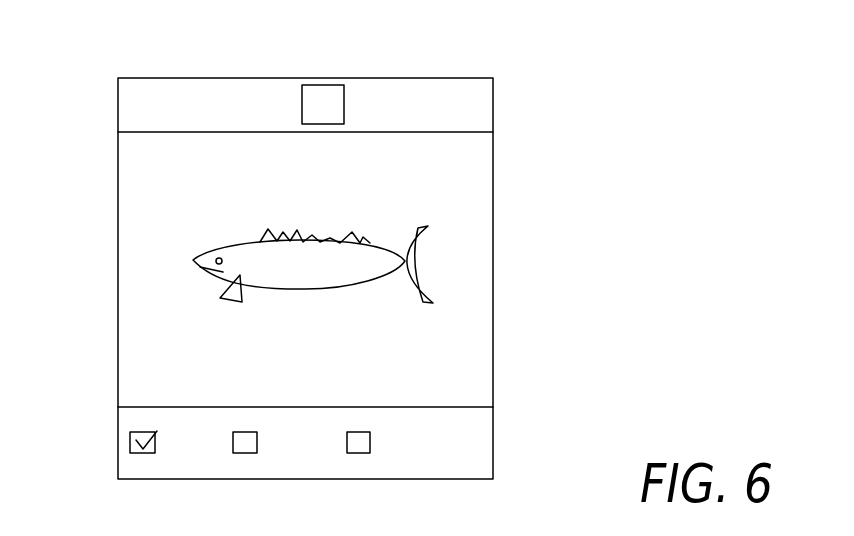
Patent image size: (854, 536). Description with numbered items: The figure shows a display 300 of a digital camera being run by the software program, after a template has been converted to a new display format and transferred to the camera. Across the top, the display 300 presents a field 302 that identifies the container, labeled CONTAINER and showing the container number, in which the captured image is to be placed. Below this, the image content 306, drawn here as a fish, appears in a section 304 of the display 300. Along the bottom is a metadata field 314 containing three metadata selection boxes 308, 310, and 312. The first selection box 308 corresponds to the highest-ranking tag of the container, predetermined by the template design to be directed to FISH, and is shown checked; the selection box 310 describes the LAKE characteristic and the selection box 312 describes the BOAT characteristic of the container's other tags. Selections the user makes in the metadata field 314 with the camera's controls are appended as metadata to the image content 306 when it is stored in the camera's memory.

The display 300 is at (493, 296).
The field 302 is at (393, 90).
The section 304 is at (467, 365).
The image content 306 is at (205, 255).
The metadata selection box 308 is at (137, 453).
The selection box 310 is at (240, 453).
The selection box 312 is at (348, 451).
The metadata field 314 is at (468, 462).